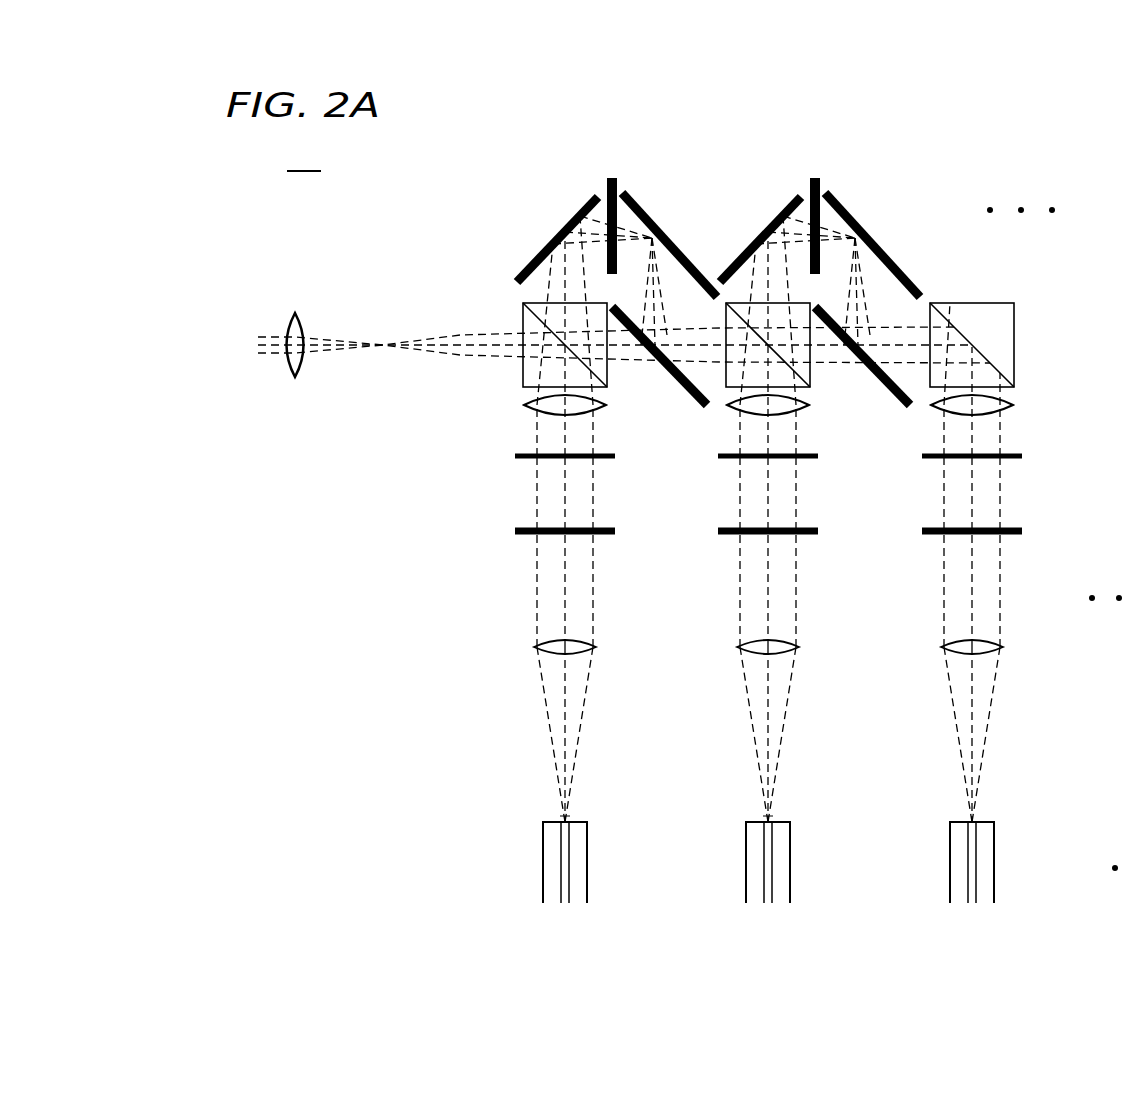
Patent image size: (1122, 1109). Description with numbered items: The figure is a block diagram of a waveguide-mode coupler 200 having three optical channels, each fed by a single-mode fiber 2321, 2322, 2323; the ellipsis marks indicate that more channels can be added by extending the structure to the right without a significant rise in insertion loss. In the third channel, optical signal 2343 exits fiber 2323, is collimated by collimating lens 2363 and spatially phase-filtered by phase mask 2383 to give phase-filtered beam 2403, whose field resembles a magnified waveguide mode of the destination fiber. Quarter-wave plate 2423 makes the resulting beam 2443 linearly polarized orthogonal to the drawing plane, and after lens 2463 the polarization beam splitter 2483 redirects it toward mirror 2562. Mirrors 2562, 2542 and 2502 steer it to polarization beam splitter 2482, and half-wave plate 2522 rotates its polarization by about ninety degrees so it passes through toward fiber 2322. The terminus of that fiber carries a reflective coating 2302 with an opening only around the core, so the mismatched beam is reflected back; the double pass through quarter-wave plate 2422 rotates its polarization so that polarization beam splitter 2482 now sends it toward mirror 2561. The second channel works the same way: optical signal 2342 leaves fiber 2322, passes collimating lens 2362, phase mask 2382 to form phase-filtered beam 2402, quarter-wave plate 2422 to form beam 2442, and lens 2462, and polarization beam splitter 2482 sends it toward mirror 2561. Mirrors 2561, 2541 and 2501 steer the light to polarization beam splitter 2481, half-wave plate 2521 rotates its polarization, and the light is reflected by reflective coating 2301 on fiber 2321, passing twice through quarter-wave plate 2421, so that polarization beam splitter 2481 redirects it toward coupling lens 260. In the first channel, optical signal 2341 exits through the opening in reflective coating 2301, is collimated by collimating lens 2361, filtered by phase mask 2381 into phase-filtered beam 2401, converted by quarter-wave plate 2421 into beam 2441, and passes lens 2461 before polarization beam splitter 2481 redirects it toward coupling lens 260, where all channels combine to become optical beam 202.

The WM coupler 200 is at (304, 159).
The optical beam 202 is at (275, 355).
The coupling lens 260 is at (296, 312).
The polarization beam splitter 2481 is at (522, 313).
The mirror 2501 is at (570, 226).
The half-wave plate 2521 is at (612, 177).
The mirror 2541 is at (637, 197).
The mirror 2561 is at (684, 388).
The lens 2461 is at (528, 402).
The beam 2441 is at (550, 435).
The quarter-wave plate 2421 is at (515, 458).
The phase-filtered beam 2401 is at (576, 492).
The phase mask 2381 is at (515, 531).
The collimating lens 2361 is at (597, 647).
The optical signal 2341 is at (583, 712).
The reflective coating 2301 is at (576, 820).
The single-mode fiber 2321 is at (587, 866).
The polarization beam splitter 2482 is at (812, 380).
The mirror 2502 is at (768, 232).
The half-wave plate 2522 is at (815, 177).
The mirror 2542 is at (857, 225).
The mirror 2562 is at (892, 410).
The lens 2462 is at (730, 408).
The beam 2442 is at (783, 428).
The quarter-wave plate 2422 is at (720, 457).
The phase-filtered beam 2402 is at (785, 485).
The phase mask 2382 is at (718, 531).
The collimating lens 2362 is at (800, 647).
The optical signal 2342 is at (786, 712).
The reflective coating 2302 is at (779, 820).
The single-mode fiber 2322 is at (790, 866).
The polarization beam splitter 2483 is at (987, 302).
The lens 2463 is at (1012, 405).
The beam 2443 is at (990, 432).
The quarter-wave plate 2423 is at (1022, 456).
The phase-filtered beam 2403 is at (985, 492).
The phase mask 2383 is at (1022, 531).
The collimating lens 2363 is at (1003, 647).
The optical signal 2343 is at (990, 712).
The single-mode fiber 2323 is at (994, 866).